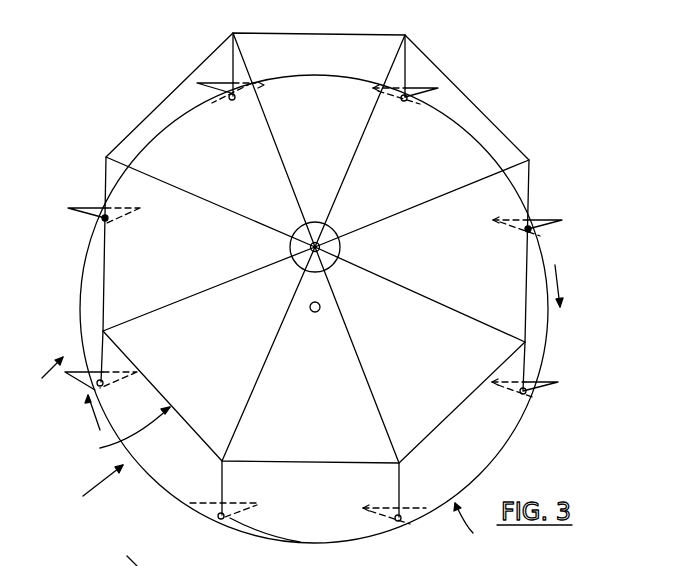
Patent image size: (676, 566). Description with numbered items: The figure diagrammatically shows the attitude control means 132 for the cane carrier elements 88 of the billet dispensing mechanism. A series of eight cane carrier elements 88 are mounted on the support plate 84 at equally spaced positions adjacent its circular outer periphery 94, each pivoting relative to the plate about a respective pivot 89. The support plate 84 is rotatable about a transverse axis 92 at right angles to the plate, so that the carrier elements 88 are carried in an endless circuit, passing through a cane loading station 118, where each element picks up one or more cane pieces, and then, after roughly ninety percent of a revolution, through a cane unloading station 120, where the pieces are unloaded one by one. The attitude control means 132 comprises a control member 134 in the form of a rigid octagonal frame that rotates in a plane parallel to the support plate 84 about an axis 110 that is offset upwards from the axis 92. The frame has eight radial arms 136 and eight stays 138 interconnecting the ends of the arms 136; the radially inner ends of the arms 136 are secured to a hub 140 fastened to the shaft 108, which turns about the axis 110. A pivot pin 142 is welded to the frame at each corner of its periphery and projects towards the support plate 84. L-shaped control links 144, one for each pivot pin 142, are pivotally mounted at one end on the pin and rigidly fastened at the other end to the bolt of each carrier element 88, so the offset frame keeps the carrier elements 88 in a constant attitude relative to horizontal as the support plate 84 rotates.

The support plate 84 is at (336, 534).
The circular outer periphery 94 is at (268, 542).
The stays 138 is at (128, 133).
The radial arms 136 is at (220, 213).
The hub 140 is at (333, 265).
The axis 110 is at (330, 212).
The shaft 108 is at (293, 267).
The transverse axis 92 is at (315, 312).
The pivot pin 142 is at (233, 33).
The L-shaped control links 144 is at (103, 358).
The cane carrier elements 88 is at (209, 84).
The pivots 89 is at (232, 100).
The cane loading station 118 is at (290, 347).
The control member 134 is at (111, 438).
The attitude control means 132 is at (83, 494).
The cane unloading station 120 is at (282, 534).